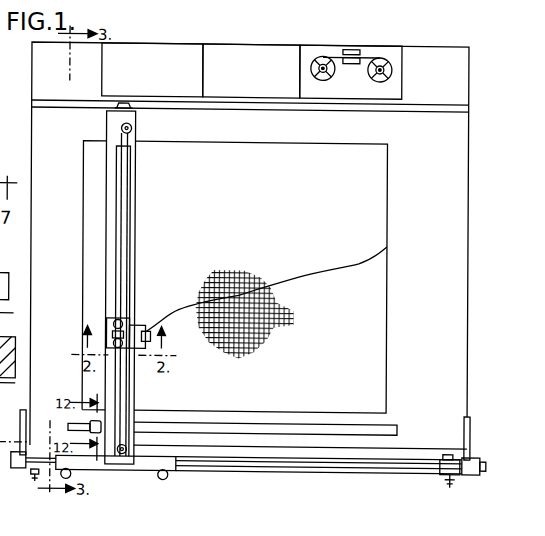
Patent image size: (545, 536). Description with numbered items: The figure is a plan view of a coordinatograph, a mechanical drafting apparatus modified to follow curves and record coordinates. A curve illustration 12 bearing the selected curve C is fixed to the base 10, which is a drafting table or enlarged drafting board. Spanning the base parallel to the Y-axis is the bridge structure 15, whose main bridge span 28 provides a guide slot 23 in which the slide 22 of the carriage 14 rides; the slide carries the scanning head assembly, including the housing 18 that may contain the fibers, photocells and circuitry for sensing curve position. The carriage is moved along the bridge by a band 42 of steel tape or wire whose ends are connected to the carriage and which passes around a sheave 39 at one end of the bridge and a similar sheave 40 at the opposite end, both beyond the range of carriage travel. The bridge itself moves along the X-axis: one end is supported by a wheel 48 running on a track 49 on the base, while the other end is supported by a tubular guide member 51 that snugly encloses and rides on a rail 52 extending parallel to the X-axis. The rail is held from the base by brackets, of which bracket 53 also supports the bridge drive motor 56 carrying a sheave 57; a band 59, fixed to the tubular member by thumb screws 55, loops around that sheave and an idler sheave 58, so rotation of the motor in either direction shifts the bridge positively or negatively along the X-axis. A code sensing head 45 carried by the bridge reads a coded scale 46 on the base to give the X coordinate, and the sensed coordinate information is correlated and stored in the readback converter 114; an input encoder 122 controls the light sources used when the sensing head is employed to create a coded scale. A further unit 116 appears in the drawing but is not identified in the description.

The base 10 is at (470, 197).
The curve illustration 12 is at (389, 167).
The carriage 14 is at (137, 322).
The bridge structure 15 is at (137, 174).
The housing 18 is at (147, 328).
The slide 22 is at (111, 320).
The guide slot 23 is at (128, 225).
The main bridge span 28 is at (110, 203).
The sheave 39 is at (134, 127).
The sheave 40 is at (122, 452).
The band 42 is at (132, 254).
The code sensing head 45 is at (71, 427).
The coded scale 46 is at (221, 428).
The wheel 48 is at (118, 104).
The track 49 is at (261, 108).
The tubular guide member 51 is at (142, 470).
The rail 52 is at (243, 466).
The bracket 53 is at (472, 450).
The thumb screws 55 is at (73, 470).
The motor 56 is at (448, 455).
The sheave 57 is at (457, 482).
The idler sheave 58 is at (34, 475).
The band 59 is at (340, 471).
The readback converter 114 is at (253, 52).
The tape recorder 116 is at (371, 47).
The input encoder 122 is at (152, 42).
The curve C is at (324, 279).